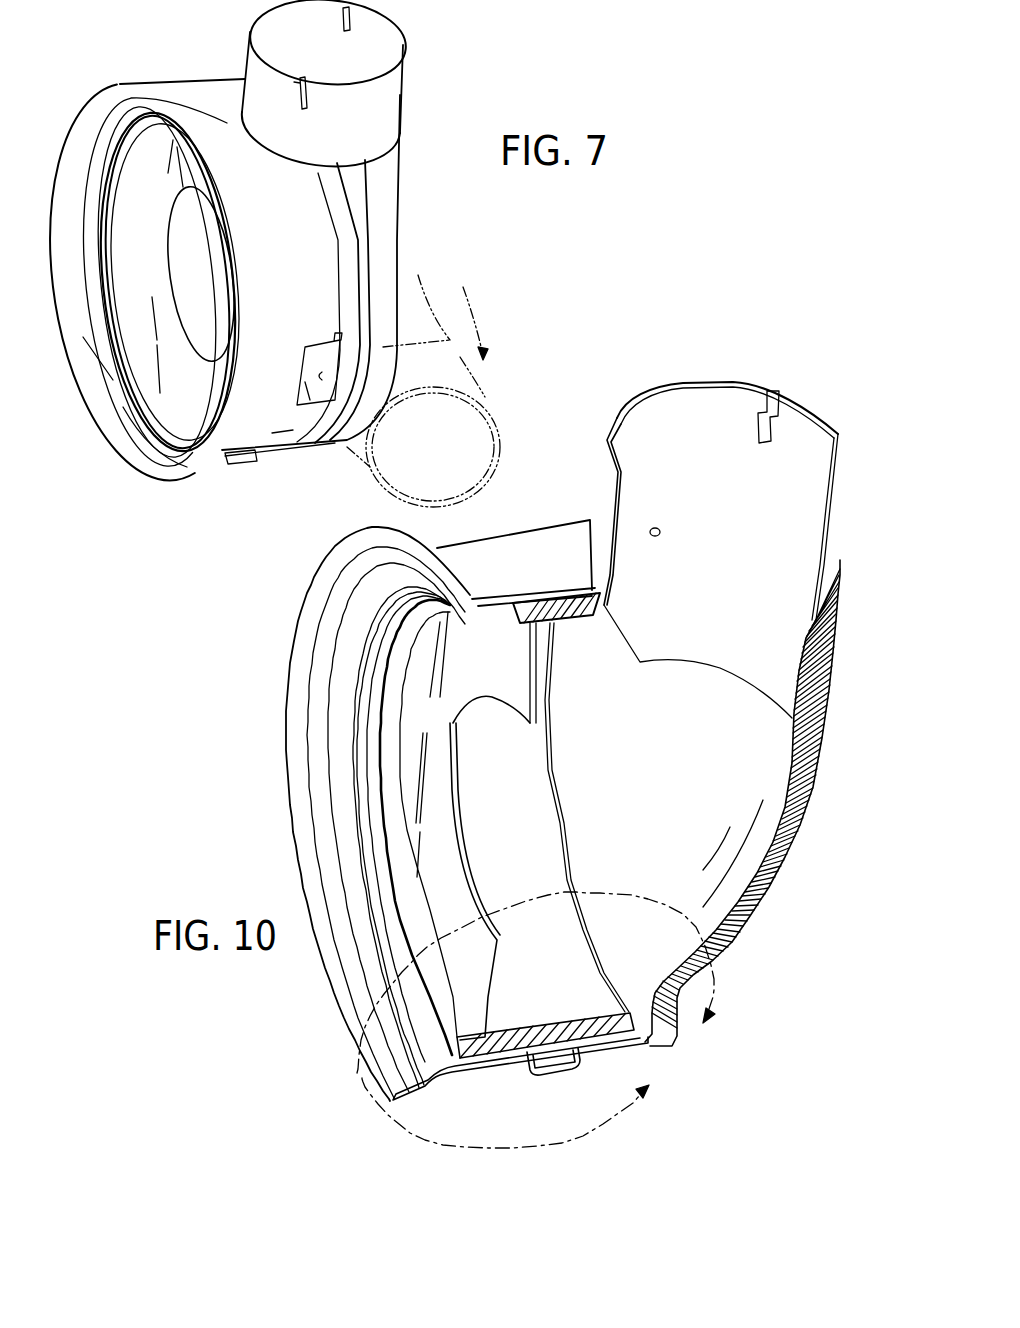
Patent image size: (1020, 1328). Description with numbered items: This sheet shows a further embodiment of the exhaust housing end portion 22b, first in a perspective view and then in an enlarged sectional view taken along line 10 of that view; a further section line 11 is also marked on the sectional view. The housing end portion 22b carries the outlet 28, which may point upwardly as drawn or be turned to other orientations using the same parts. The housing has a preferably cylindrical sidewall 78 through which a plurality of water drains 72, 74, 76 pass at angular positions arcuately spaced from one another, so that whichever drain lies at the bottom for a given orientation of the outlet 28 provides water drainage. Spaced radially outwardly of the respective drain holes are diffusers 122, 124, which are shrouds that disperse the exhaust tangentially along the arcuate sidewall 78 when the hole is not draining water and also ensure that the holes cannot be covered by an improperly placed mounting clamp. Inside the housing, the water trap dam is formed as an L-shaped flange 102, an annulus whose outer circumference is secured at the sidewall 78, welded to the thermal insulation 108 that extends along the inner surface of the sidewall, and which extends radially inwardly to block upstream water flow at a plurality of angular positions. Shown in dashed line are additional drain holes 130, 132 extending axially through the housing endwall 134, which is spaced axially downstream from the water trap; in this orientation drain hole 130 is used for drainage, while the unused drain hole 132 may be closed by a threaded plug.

In FIG. 7, the section line 10 is at (422, 203).
In FIG. 10, the section line 11 is at (545, 1020).
In FIG. 7, the housing end portion 22b is at (195, 88).
In FIG. 10, the housing end portion 22b is at (533, 527).
In FIG. 7, the outlet 28 is at (398, 107).
In FIG. 10, the outlet 28 is at (828, 522).
In FIG. 10, the water drain 72 is at (540, 1052).
In FIG. 7, the water drain 74 is at (305, 388).
In FIG. 7, the water drain 76 is at (152, 135).
In FIG. 10, the water drain 76 is at (465, 622).
In FIG. 7, the sidewall 78 is at (282, 422).
In FIG. 10, the sidewall 78 is at (440, 1073).
In FIG. 7, the L-shaped flange 102 is at (183, 330).
In FIG. 10, the L-shaped flange 102 is at (445, 842).
In FIG. 10, the thermal insulation 108 is at (490, 1052).
In FIG. 7, the diffuser 122 is at (242, 462).
In FIG. 10, the diffuser 122 is at (550, 1073).
In FIG. 7, the diffuser 124 is at (330, 345).
In FIG. 10, the drain hole 130 is at (645, 990).
In FIG. 10, the drain hole 132 is at (615, 728).
In FIG. 10, the housing endwall 134 is at (773, 893).